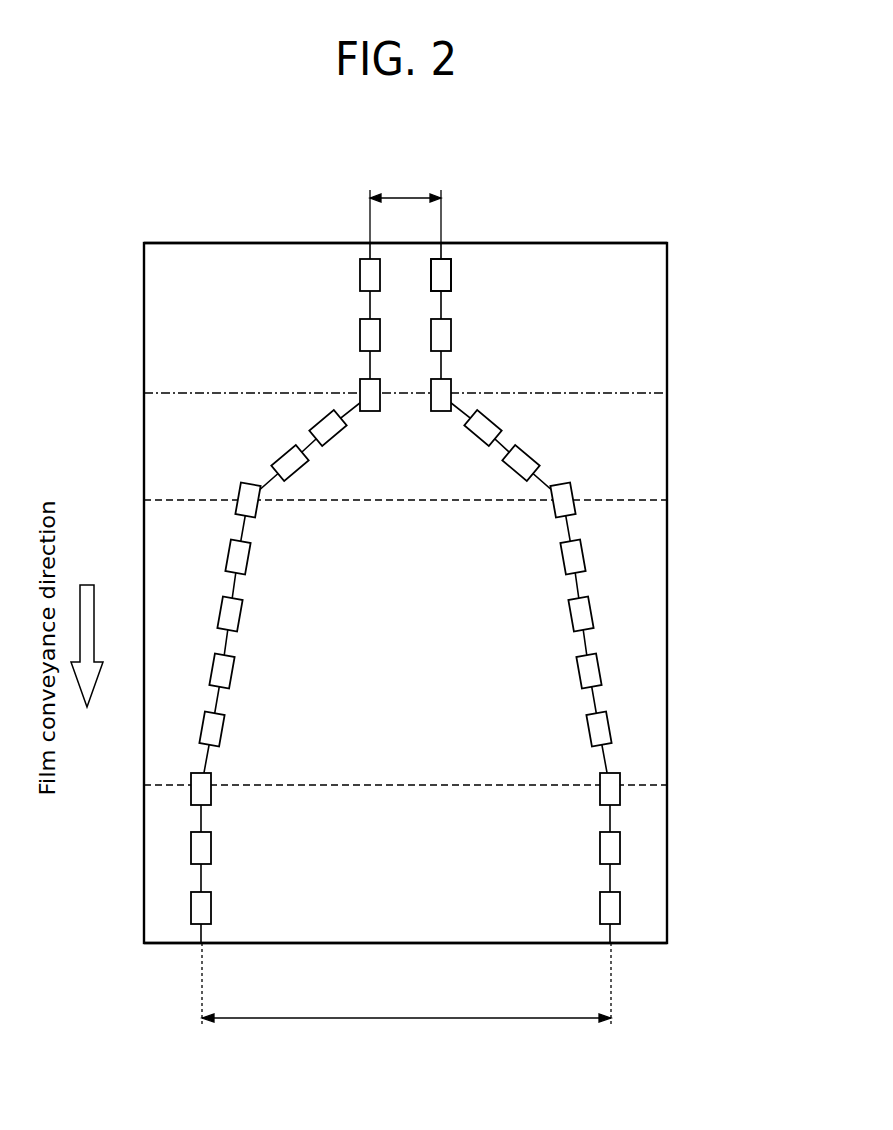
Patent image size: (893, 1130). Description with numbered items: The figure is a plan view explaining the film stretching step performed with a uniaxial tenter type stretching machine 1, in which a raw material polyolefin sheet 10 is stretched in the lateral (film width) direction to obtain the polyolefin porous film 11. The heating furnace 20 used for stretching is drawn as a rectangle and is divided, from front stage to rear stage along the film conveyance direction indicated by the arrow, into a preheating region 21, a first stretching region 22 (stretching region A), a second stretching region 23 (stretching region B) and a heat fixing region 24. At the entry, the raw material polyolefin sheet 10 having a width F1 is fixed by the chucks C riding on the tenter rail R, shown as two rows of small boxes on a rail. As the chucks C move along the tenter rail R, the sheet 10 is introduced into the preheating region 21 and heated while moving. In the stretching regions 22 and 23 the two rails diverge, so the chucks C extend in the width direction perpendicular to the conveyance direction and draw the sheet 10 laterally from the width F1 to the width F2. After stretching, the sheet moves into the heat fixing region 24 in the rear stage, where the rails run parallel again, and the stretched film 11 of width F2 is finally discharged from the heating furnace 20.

The tenter type stretching machine 1 is at (419, 589).
The raw material polyolefin sheet 10 is at (384, 375).
The polyolefin porous film 11 is at (230, 928).
The heating furnace 20 is at (212, 243).
The preheating region 21 is at (678, 310).
The stretching region 22 is at (678, 448).
The stretching region 23 is at (678, 638).
The heat fixing region 24 is at (678, 857).
The chuck C is at (453, 268).
The tenter rail R is at (442, 365).
The width of raw material polyolefin sheet F1 is at (405, 207).
The width of polyolefin porous film F2 is at (406, 997).